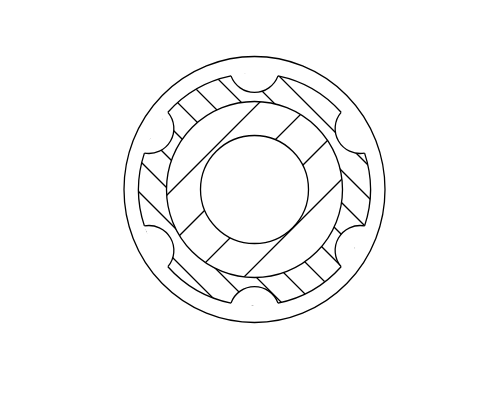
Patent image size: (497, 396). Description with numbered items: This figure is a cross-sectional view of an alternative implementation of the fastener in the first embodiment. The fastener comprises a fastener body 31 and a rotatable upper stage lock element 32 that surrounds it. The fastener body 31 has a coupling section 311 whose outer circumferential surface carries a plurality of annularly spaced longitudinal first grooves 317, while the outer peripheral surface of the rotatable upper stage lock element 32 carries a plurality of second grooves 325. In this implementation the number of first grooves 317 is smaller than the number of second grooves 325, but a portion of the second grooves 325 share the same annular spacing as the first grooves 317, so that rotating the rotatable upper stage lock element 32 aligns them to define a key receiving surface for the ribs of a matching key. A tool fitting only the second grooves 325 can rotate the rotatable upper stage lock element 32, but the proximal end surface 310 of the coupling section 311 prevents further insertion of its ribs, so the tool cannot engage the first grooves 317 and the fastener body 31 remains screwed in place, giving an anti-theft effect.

The fastener body 31 is at (131, 113).
The rotatable upper stage lock element 32 is at (321, 88).
The first grooves 317 is at (348, 142).
The second grooves 325 is at (269, 93).
The proximal end surface 310 is at (257, 299).
The coupling section 311 is at (258, 305).